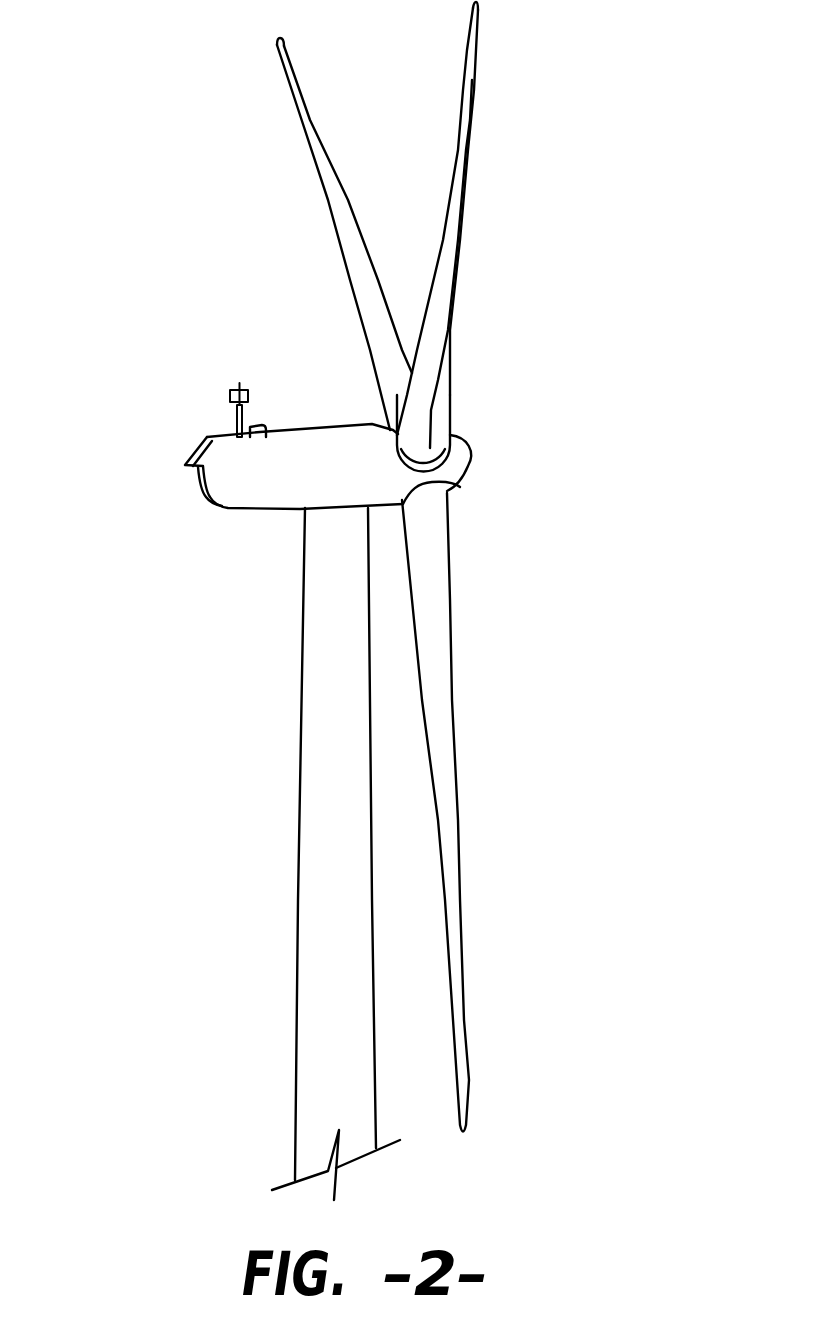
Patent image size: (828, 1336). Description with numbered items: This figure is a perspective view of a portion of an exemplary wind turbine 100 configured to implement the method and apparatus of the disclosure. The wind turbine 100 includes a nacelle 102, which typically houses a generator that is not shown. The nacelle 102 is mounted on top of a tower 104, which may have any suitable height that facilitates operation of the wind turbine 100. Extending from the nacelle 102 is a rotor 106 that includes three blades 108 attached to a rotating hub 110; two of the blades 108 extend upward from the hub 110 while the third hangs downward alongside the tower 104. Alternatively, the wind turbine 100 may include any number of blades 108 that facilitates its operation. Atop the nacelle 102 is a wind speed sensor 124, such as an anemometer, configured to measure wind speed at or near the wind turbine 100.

The wind turbine 100 is at (153, 172).
The nacelle 102 is at (258, 516).
The tower 104 is at (297, 922).
The rotor 106 is at (596, 331).
The blades 108 is at (346, 203).
The rotating hub 110 is at (471, 458).
The wind speed sensor 124 is at (235, 420).